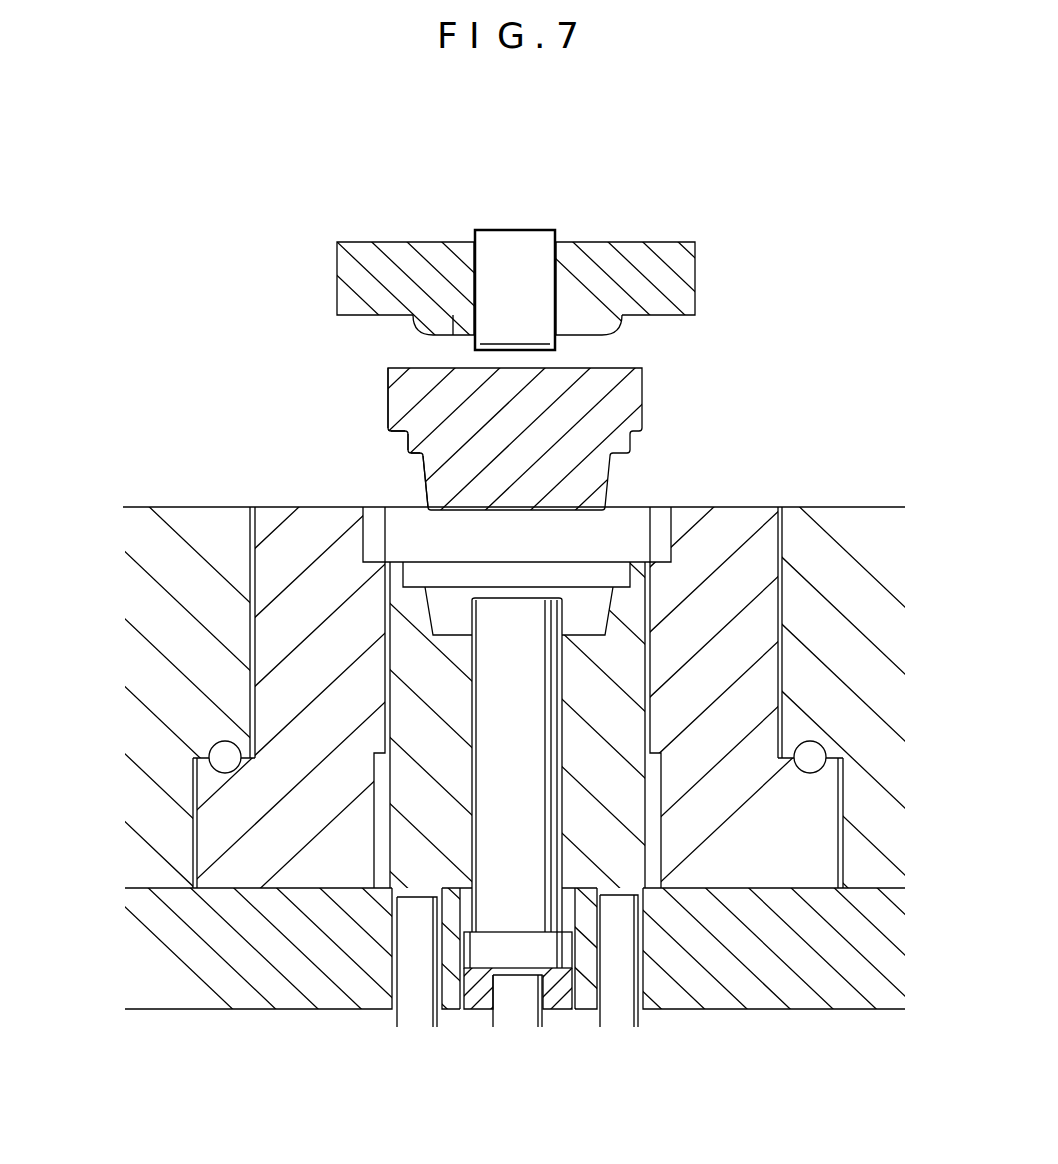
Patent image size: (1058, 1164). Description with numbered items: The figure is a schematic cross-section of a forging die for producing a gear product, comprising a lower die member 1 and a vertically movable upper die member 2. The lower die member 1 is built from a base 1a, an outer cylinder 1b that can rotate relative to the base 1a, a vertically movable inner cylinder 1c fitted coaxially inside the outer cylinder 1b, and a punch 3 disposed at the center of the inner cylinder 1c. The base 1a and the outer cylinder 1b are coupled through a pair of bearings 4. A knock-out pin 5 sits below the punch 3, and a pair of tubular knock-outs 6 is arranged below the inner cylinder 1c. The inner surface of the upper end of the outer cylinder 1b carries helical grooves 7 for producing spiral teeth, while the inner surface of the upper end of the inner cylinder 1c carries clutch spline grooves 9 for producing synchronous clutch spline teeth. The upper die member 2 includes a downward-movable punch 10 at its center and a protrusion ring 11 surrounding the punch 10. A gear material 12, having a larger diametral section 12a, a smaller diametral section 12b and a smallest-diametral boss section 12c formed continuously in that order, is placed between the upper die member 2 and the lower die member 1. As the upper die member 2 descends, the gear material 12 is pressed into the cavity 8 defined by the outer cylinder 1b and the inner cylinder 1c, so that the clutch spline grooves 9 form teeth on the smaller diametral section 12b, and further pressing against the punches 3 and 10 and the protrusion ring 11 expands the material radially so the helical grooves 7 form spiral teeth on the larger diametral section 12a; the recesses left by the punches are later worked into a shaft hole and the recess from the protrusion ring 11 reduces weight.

The lower die member 1 is at (529, 582).
The base 1a is at (867, 520).
The outer cylinder 1b is at (729, 525).
The inner cylinder 1c is at (663, 575).
The upper die member 2 is at (677, 268).
The punch 3 is at (496, 920).
The bearings 4 is at (833, 740).
The knock-out pin 5 is at (523, 1007).
The tubular knock-outs 6 is at (410, 1015).
The helical grooves 7 is at (375, 537).
The cavity 8 is at (590, 540).
The clutch spline grooves 9 is at (625, 572).
The punch 10 is at (512, 232).
The protrusion ring 11 is at (417, 322).
The gear material 12 is at (529, 582).
The larger diametral section 12a is at (398, 402).
The smaller diametral section 12b is at (407, 438).
The smallest-diametral boss section 12c is at (424, 487).